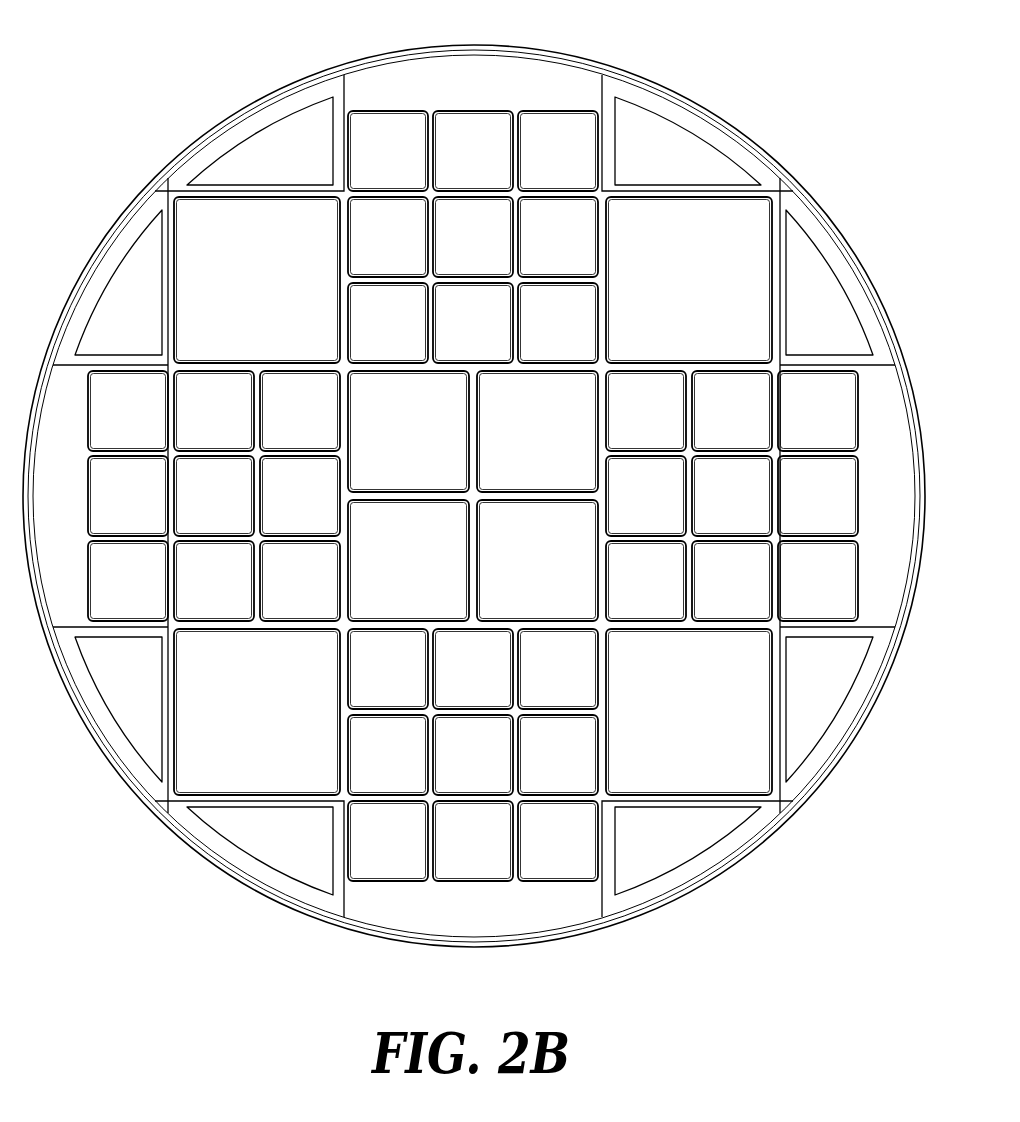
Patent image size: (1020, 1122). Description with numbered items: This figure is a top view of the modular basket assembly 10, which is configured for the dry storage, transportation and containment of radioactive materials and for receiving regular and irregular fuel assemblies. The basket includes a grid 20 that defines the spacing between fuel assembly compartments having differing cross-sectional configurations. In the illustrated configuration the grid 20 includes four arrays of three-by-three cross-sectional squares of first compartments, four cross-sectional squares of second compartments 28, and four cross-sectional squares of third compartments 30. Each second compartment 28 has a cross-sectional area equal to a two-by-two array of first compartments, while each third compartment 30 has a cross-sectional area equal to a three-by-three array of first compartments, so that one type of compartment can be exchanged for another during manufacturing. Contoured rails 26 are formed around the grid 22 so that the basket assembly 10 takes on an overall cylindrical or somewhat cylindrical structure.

The modular basket assembly 10 is at (841, 229).
The grid 20 is at (818, 59).
The grid 22 is at (478, 122).
The contoured rails 26 is at (669, 108).
The second compartments 28 is at (278, 203).
The third compartments 30 is at (395, 380).